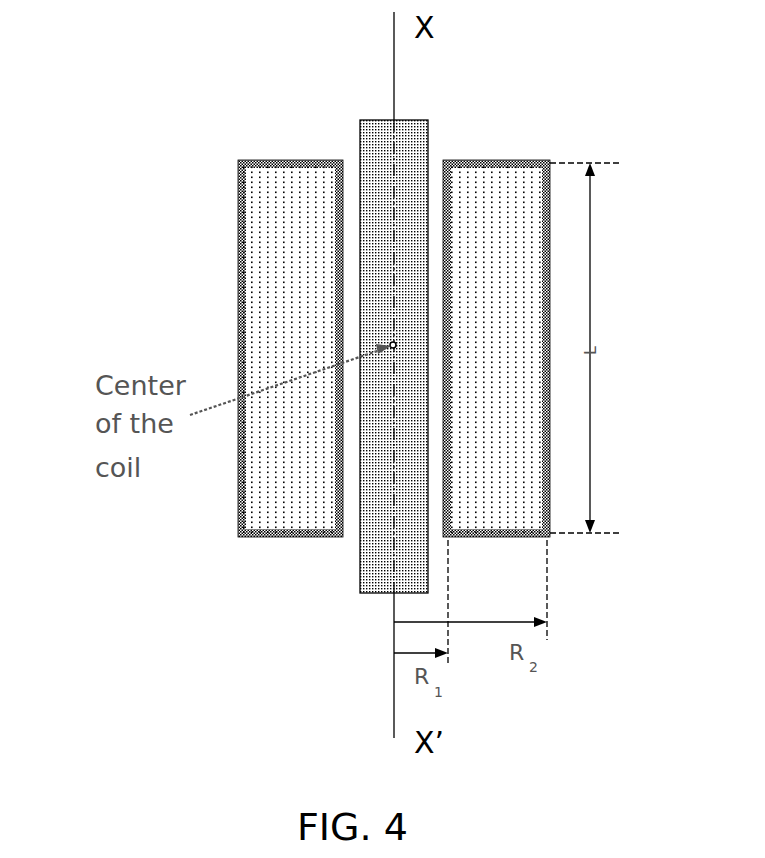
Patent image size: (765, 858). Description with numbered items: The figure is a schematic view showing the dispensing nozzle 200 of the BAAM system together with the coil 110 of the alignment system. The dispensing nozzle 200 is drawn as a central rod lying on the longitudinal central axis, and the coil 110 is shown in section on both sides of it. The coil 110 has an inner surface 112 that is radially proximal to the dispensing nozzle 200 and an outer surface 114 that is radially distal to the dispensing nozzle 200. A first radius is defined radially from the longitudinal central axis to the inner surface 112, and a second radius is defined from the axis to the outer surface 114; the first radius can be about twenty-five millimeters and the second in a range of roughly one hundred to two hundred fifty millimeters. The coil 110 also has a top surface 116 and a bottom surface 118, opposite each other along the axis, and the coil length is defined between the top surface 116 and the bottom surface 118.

The coil 110 is at (297, 214).
The inner surface 112 is at (339, 221).
The outer surface 114 is at (237, 258).
The top surface 116 is at (497, 162).
The bottom surface 118 is at (275, 532).
The dispensing nozzle 200 is at (381, 160).